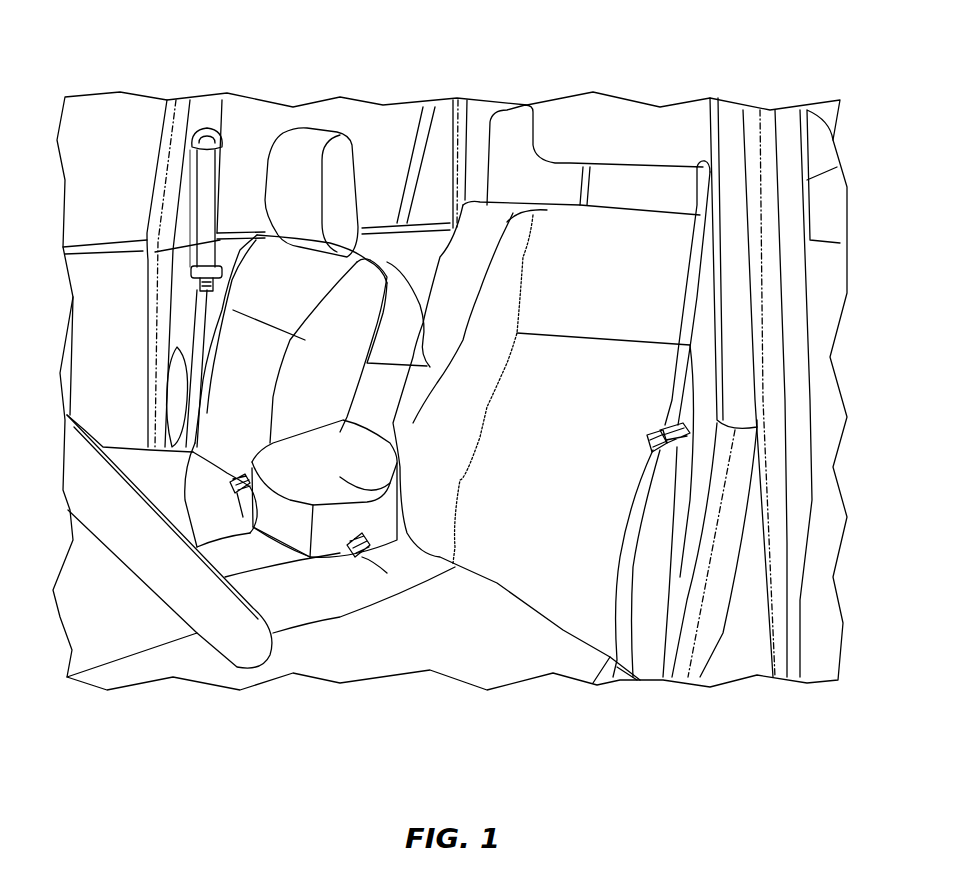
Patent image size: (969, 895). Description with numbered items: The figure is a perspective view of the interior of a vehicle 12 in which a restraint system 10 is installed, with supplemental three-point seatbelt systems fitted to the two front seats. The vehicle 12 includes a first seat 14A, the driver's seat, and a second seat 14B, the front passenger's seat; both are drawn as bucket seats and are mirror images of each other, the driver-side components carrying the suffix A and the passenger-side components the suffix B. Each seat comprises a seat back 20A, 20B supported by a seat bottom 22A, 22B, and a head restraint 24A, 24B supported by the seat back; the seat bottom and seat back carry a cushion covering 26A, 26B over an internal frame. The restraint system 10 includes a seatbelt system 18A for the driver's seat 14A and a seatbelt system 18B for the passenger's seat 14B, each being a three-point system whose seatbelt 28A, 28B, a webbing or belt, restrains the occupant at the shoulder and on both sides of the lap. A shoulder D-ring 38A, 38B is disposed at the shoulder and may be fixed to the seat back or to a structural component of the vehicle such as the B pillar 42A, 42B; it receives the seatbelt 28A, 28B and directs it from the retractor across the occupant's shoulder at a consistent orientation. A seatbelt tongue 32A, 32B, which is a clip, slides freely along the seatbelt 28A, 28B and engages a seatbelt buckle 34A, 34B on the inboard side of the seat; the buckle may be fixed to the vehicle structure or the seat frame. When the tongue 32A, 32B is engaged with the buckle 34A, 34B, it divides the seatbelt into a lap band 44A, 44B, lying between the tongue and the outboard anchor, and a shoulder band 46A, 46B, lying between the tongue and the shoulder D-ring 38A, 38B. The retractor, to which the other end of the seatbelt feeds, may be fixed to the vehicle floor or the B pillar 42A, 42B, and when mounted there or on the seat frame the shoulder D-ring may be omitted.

The restraint system 10 is at (93, 132).
The vehicle 12 is at (486, 50).
The first seat 14A is at (573, 663).
The second seat 14B is at (305, 123).
The seatbelt system 18A is at (632, 472).
The seatbelt system 18B is at (147, 200).
The seat back 20A is at (477, 337).
The seat back 20B is at (340, 383).
The seat bottom 22A is at (357, 687).
The seat bottom 22B is at (120, 443).
The head restraint 24A is at (597, 115).
The head restraint 24B is at (353, 162).
The cushion covering 26A is at (533, 534).
The cushion covering 26B is at (258, 401).
The seatbelt 28A is at (660, 330).
The seatbelt 28B is at (217, 322).
The seatbelt tongue 32A is at (650, 447).
The seatbelt tongue 32B is at (190, 270).
The seatbelt buckle 34A is at (365, 560).
The seatbelt buckle 34B is at (230, 488).
The shoulder D-ring 38A is at (697, 188).
The shoulder D-ring 38B is at (183, 147).
The B pillar 42A is at (710, 122).
The B pillar 42B is at (157, 143).
The lap band 44A is at (630, 593).
The lap band 44B is at (183, 380).
The shoulder band 46A is at (687, 297).
The shoulder band 46B is at (217, 197).